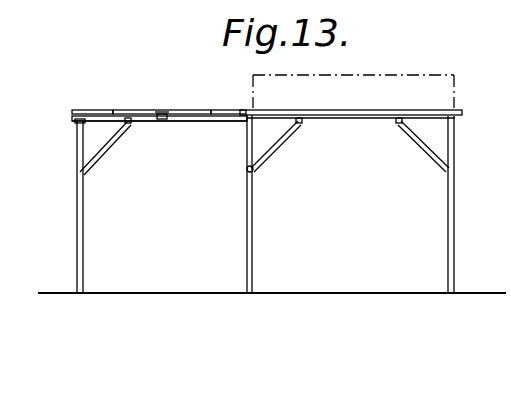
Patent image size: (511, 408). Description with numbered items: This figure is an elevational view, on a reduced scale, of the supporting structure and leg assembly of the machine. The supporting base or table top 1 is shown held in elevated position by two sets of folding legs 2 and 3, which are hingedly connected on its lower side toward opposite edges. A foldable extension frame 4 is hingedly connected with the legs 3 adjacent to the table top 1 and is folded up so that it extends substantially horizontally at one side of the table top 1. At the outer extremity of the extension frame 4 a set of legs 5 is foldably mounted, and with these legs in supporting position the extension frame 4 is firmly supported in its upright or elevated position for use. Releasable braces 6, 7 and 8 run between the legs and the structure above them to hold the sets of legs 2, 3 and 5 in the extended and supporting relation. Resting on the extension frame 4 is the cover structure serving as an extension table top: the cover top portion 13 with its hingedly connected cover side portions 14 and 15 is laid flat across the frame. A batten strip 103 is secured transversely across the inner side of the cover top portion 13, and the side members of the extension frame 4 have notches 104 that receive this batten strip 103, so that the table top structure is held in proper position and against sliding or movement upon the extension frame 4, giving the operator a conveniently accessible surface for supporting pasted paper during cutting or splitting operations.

The supporting base or table top 1 is at (347, 117).
The folding legs 2 is at (447, 204).
The folding legs 3 is at (254, 205).
The foldable extension frame 4 is at (183, 121).
The legs 5 is at (85, 207).
The releasable brace 6 is at (424, 144).
The releasable brace 7 is at (277, 147).
The releasable brace 8 is at (110, 147).
The cover top portion 13 is at (132, 109).
The cover side portion 14 is at (90, 110).
The cover side portion 15 is at (243, 110).
The batten strip 103 is at (163, 113).
The notches 104 is at (148, 113).